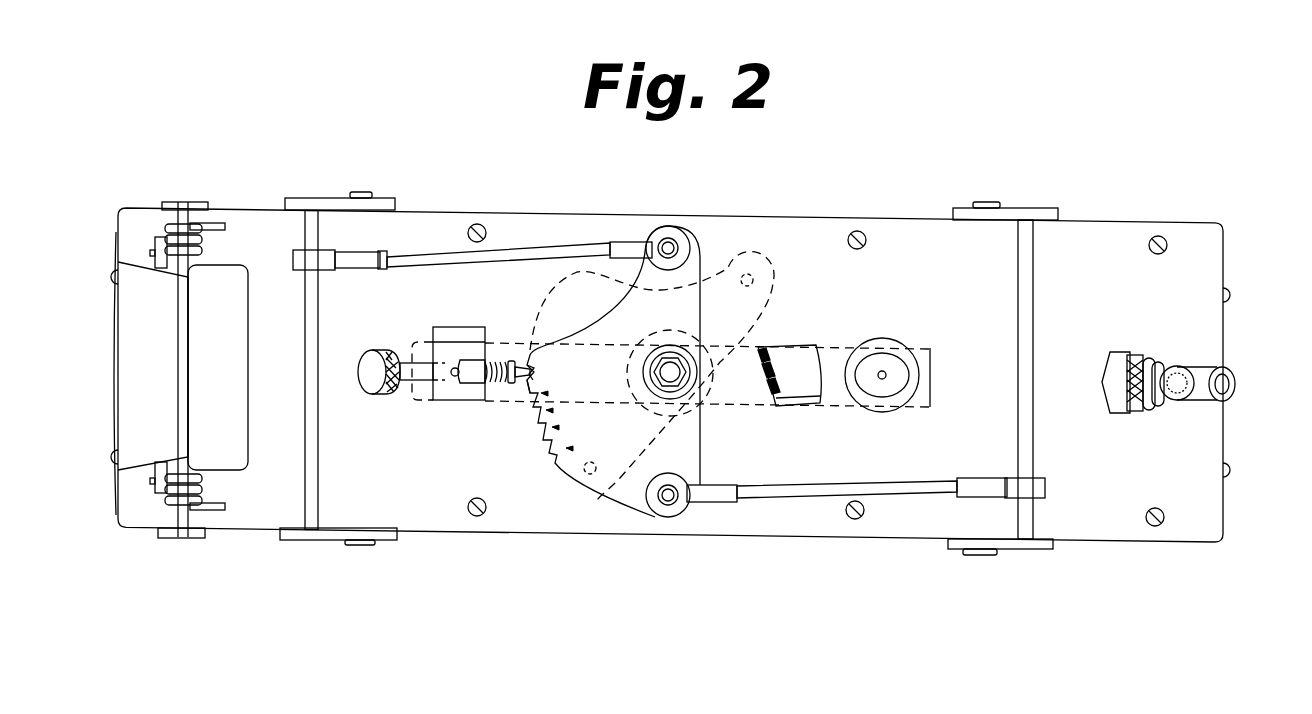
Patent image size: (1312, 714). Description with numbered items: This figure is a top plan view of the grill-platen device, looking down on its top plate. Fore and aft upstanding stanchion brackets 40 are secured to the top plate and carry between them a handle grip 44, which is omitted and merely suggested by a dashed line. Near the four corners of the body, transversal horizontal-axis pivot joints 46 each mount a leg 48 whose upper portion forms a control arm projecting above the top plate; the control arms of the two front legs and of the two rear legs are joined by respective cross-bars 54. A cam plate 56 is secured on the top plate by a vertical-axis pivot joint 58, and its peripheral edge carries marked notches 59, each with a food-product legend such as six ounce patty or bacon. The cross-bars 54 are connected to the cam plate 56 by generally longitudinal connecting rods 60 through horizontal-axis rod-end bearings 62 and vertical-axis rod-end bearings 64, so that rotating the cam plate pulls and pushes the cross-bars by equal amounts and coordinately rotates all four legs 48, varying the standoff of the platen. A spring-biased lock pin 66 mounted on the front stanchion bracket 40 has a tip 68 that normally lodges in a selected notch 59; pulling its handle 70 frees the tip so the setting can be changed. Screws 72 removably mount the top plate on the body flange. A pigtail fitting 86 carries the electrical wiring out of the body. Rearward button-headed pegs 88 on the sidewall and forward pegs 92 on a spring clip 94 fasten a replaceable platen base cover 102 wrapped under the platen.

The stanchion bracket 40 is at (457, 325).
The handle grip 44 is at (787, 345).
The pivot joint 46 is at (364, 192).
The leg 48 is at (368, 210).
The cross-bar 54 is at (305, 390).
The cam plate 56 is at (695, 450).
The pivot joint 58 is at (670, 385).
The notch 59 is at (540, 470).
The connecting rod 60 is at (508, 250).
The rod-end bearing 62 is at (388, 252).
The rod-end bearing 64 is at (670, 248).
The lock pin 66 is at (502, 358).
The tip 68 is at (520, 400).
The handle 70 is at (376, 350).
The screw 72 is at (866, 244).
The pigtail fitting 86 is at (1158, 352).
The peg 88 is at (1230, 295).
The peg 92 is at (108, 278).
The spring clip 94 is at (118, 352).
The platen base cover 102 is at (118, 236).